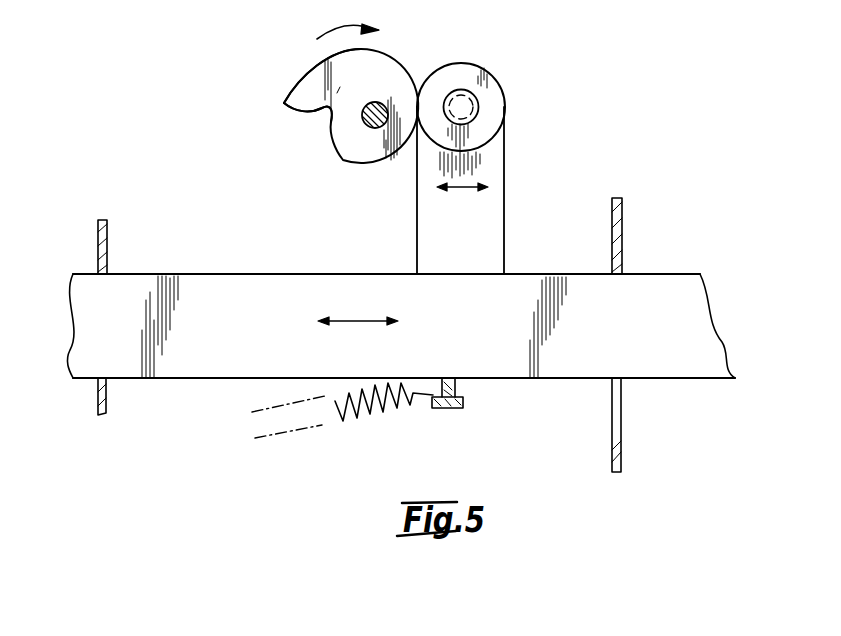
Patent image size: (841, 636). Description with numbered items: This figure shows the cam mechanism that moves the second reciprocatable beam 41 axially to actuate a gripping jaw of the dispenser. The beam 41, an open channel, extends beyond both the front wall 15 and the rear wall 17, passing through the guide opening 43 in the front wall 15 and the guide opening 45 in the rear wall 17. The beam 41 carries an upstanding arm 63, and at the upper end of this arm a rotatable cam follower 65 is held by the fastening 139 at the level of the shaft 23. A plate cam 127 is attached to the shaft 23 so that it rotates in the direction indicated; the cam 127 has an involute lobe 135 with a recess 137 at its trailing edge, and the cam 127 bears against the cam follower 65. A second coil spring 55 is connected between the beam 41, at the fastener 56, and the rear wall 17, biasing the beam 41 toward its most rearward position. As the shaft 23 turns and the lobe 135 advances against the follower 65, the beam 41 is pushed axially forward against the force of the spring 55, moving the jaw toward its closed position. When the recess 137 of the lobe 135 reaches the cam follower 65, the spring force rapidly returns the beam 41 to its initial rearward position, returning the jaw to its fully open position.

The plate cam 127 is at (362, 75).
The involute lobe 135 is at (302, 78).
The recess 137 is at (308, 110).
The shaft 23 is at (378, 107).
The rotatable cam follower 65 is at (500, 82).
The fastening 139 is at (478, 107).
The upstanding arm 63 is at (504, 194).
The second reciprocatable beam 41 is at (267, 273).
The rear wall 17 is at (107, 235).
The guide opening 45 is at (105, 378).
The front wall 15 is at (622, 240).
The guide opening 43 is at (622, 435).
The second coil spring 55 is at (385, 412).
The fastener 56 is at (453, 408).